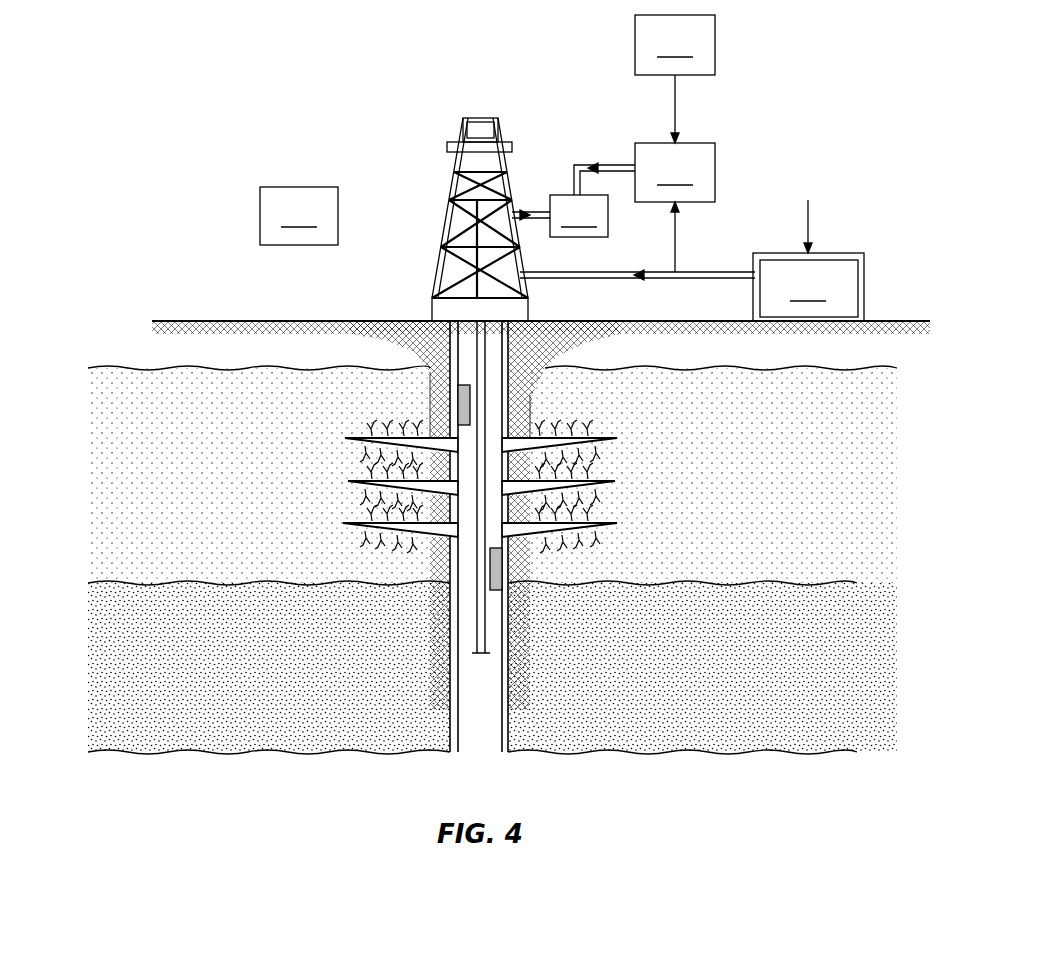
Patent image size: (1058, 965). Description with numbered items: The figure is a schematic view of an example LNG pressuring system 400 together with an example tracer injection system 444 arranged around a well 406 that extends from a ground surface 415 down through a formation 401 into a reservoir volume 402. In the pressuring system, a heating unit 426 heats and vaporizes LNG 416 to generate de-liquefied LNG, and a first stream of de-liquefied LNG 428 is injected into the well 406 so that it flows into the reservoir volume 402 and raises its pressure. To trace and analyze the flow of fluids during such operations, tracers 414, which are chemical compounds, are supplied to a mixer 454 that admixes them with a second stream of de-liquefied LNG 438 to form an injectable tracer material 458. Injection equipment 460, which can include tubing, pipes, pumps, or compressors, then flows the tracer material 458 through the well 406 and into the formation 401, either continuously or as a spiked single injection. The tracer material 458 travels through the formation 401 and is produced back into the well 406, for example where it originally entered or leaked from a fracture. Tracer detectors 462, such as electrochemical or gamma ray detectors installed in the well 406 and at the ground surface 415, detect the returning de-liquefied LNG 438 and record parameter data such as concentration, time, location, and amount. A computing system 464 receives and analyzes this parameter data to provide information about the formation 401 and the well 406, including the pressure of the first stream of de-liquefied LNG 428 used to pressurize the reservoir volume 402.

The LNG pressuring system 400 is at (847, 165).
The formation 401 is at (132, 353).
The reservoir volume 402 is at (905, 370).
The well 406 is at (432, 372).
The tracers 414 is at (675, 45).
The ground surface 415 is at (240, 319).
The LNG 416 is at (813, 218).
The heating unit 426 is at (808, 287).
The first stream of de-liquefied LNG 428 is at (676, 280).
The second stream of de-liquefied LNG 438 is at (681, 240).
The tracer injection system 444 is at (708, 103).
The mixer 454 is at (675, 172).
The tracer material 458 is at (539, 210).
The injection equipment 460 is at (579, 216).
The tracer detectors 462 is at (456, 403).
The computing system 464 is at (299, 216).